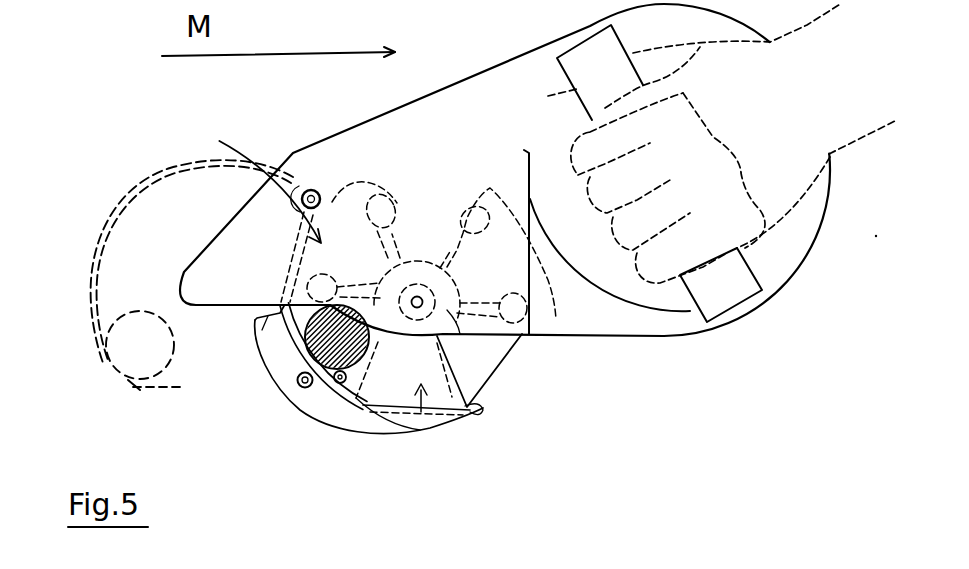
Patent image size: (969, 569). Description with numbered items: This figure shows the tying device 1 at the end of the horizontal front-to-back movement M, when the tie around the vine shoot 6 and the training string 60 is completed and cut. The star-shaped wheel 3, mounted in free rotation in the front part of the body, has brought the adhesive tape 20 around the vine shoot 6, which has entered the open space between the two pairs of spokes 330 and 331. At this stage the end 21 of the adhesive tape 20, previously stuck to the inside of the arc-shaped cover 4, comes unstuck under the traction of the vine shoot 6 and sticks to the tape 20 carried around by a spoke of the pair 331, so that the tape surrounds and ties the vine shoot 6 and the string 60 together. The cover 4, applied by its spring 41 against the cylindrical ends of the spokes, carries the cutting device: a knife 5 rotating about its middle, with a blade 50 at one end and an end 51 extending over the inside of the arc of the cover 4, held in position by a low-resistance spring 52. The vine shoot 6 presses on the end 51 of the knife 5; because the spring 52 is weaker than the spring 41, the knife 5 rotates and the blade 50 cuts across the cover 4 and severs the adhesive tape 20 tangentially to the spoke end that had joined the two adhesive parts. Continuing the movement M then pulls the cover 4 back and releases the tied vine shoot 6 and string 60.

The device 1 is at (158, 132).
The adhesive tape 20 is at (520, 335).
The end of the adhesive tape 21 is at (166, 388).
The star-shaped wheel 3 is at (450, 310).
The pair of spokes 330 is at (257, 176).
The pair of spokes 331 is at (422, 412).
The cover 4 is at (287, 337).
The spring 41 is at (299, 183).
The knife 5 is at (290, 345).
The blade 50 is at (385, 418).
The end of the knife 51 is at (270, 325).
The spring 52 is at (310, 385).
The vine shoot 6 is at (127, 357).
The training string 60 is at (135, 385).